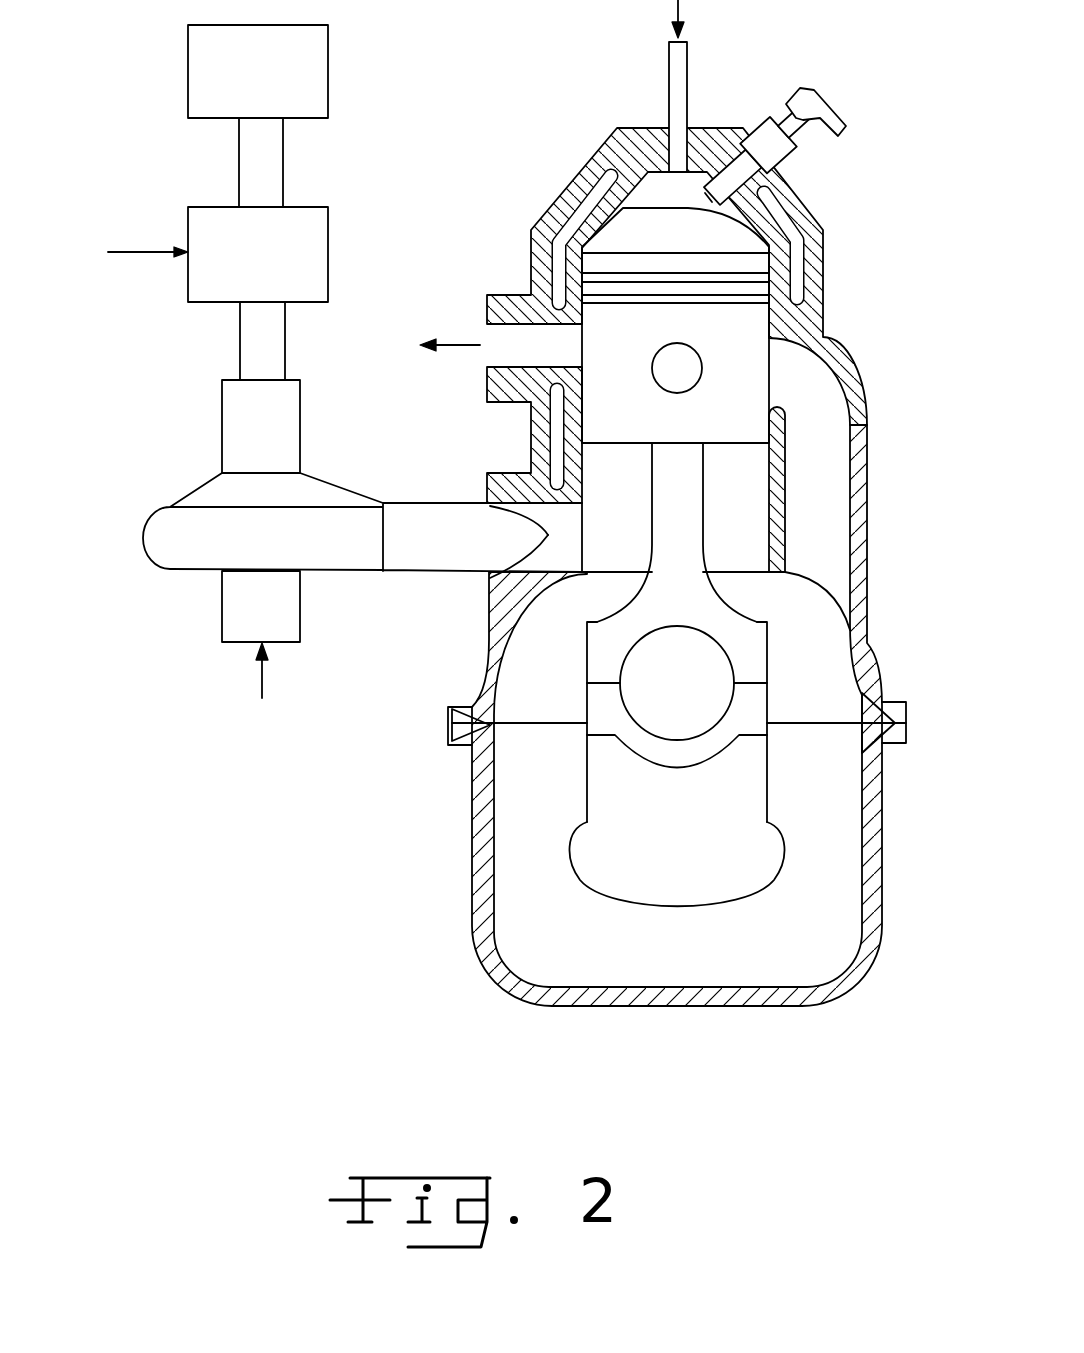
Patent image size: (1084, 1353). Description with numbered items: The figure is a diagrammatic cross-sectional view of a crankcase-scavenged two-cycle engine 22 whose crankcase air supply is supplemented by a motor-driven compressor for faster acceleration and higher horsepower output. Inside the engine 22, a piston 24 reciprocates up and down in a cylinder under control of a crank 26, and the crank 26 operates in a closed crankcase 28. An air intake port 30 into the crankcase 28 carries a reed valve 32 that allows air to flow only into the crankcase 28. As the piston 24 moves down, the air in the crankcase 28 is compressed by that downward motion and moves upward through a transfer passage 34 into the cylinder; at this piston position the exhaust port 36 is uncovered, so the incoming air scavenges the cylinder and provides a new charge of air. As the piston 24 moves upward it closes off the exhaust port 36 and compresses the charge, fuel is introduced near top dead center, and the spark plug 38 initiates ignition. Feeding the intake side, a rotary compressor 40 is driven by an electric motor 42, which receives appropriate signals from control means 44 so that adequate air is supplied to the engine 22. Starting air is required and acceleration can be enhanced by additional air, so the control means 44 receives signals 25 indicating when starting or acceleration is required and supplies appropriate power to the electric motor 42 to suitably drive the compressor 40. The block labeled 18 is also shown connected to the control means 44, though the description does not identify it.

The engine control unit 18 is at (237, 89).
The control means 44 is at (237, 272).
The signals 25 is at (135, 252).
The electric motor 42 is at (228, 428).
The rotary compressor 40 is at (173, 553).
The engine 22 is at (836, 247).
The exhaust port 36 is at (512, 333).
The air intake port 30 is at (522, 515).
The reed valve 32 is at (548, 535).
The piston 24 is at (760, 328).
The crank 26 is at (718, 664).
The crankcase 28 is at (470, 862).
The transfer passage 34 is at (830, 433).
The spark plug 38 is at (753, 120).